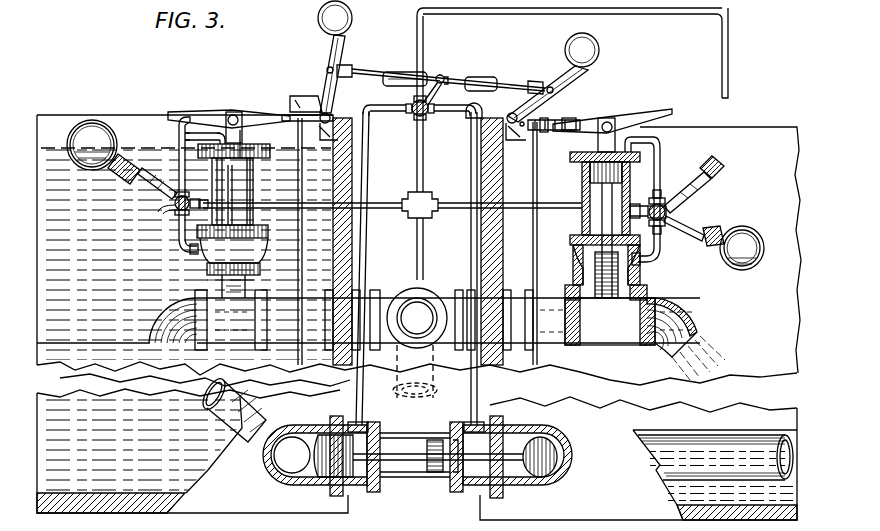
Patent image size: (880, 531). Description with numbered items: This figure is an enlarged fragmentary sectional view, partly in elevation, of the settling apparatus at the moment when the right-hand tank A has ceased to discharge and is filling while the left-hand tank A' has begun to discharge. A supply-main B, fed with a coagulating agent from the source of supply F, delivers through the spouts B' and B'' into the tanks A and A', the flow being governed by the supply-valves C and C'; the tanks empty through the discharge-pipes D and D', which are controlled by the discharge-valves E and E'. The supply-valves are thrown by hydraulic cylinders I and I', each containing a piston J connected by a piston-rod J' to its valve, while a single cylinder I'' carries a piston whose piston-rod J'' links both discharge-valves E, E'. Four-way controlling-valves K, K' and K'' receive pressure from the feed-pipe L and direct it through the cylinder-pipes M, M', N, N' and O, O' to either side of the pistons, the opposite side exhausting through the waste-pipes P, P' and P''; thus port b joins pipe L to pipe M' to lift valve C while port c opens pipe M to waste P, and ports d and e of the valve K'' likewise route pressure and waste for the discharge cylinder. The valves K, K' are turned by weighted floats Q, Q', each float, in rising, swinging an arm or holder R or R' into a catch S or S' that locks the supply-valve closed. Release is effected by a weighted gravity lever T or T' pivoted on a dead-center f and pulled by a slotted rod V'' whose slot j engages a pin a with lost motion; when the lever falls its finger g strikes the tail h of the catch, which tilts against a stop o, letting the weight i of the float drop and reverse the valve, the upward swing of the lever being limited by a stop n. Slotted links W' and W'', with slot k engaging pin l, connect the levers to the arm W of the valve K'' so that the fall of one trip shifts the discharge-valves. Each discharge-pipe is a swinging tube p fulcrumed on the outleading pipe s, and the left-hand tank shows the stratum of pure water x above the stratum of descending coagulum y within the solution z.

The tank A is at (720, 238).
The tank A' is at (185, 228).
The supply-main B is at (448, 319).
The spout B' is at (686, 339).
The spout B'' is at (154, 320).
The supply-valve C is at (601, 248).
The supply-valve C' is at (240, 247).
The discharge-pipe D is at (715, 456).
The discharge-pipe D' is at (222, 409).
The discharge-valve E is at (462, 464).
The discharge-valve E' is at (321, 463).
The source of supply for a coagulating agent F is at (392, 390).
The cylinder I is at (596, 198).
The cylinder I' is at (243, 191).
The cylinder I'' is at (415, 445).
The piston J is at (524, 317).
The piston-rod J' is at (584, 240).
The piston-rod J'' is at (429, 471).
The controlling-valve K is at (683, 212).
The controlling-valve K' is at (166, 203).
The controlling-valve K'' is at (419, 124).
The feed-pipe L is at (412, 192).
The cylinder-pipe M is at (653, 192).
The cylinder-pipe M' is at (655, 260).
The cylinder-pipe N is at (174, 177).
The cylinder-pipe N' is at (171, 243).
The cylinder-pipe O is at (481, 272).
The cylinder-pipe O' is at (373, 272).
The waste-pipe P is at (664, 208).
The waste-pipe P' is at (141, 226).
The waste-pipe P'' is at (575, 53).
The float Q is at (742, 248).
The float Q' is at (92, 145).
The arm or holder R is at (705, 184).
The arm or holder R' is at (142, 162).
The catch S is at (612, 123).
The catch S' is at (229, 123).
The gravity lever T is at (553, 77).
The gravity lever T' is at (321, 57).
The slotted rod V'' is at (417, 241).
The arm W is at (438, 65).
The slotted link W' is at (492, 72).
The slotted link W'' is at (388, 64).
The pin a is at (618, 152).
The port b is at (651, 230).
The port c is at (664, 198).
The port d is at (414, 110).
The port e is at (420, 113).
The dead-center f is at (338, 116).
The finger g is at (552, 110).
The tail h is at (570, 116).
The weight i is at (718, 232).
The slot j is at (534, 106).
The slot k is at (463, 67).
The pin l is at (441, 76).
The stop n is at (478, 103).
The stop o is at (243, 134).
The swinging tube p is at (218, 390).
The outleading pipe s is at (276, 474).
The stratum of pure water x is at (804, 426).
The stratum of descending coagulum y is at (415, 427).
The solution z is at (406, 454).